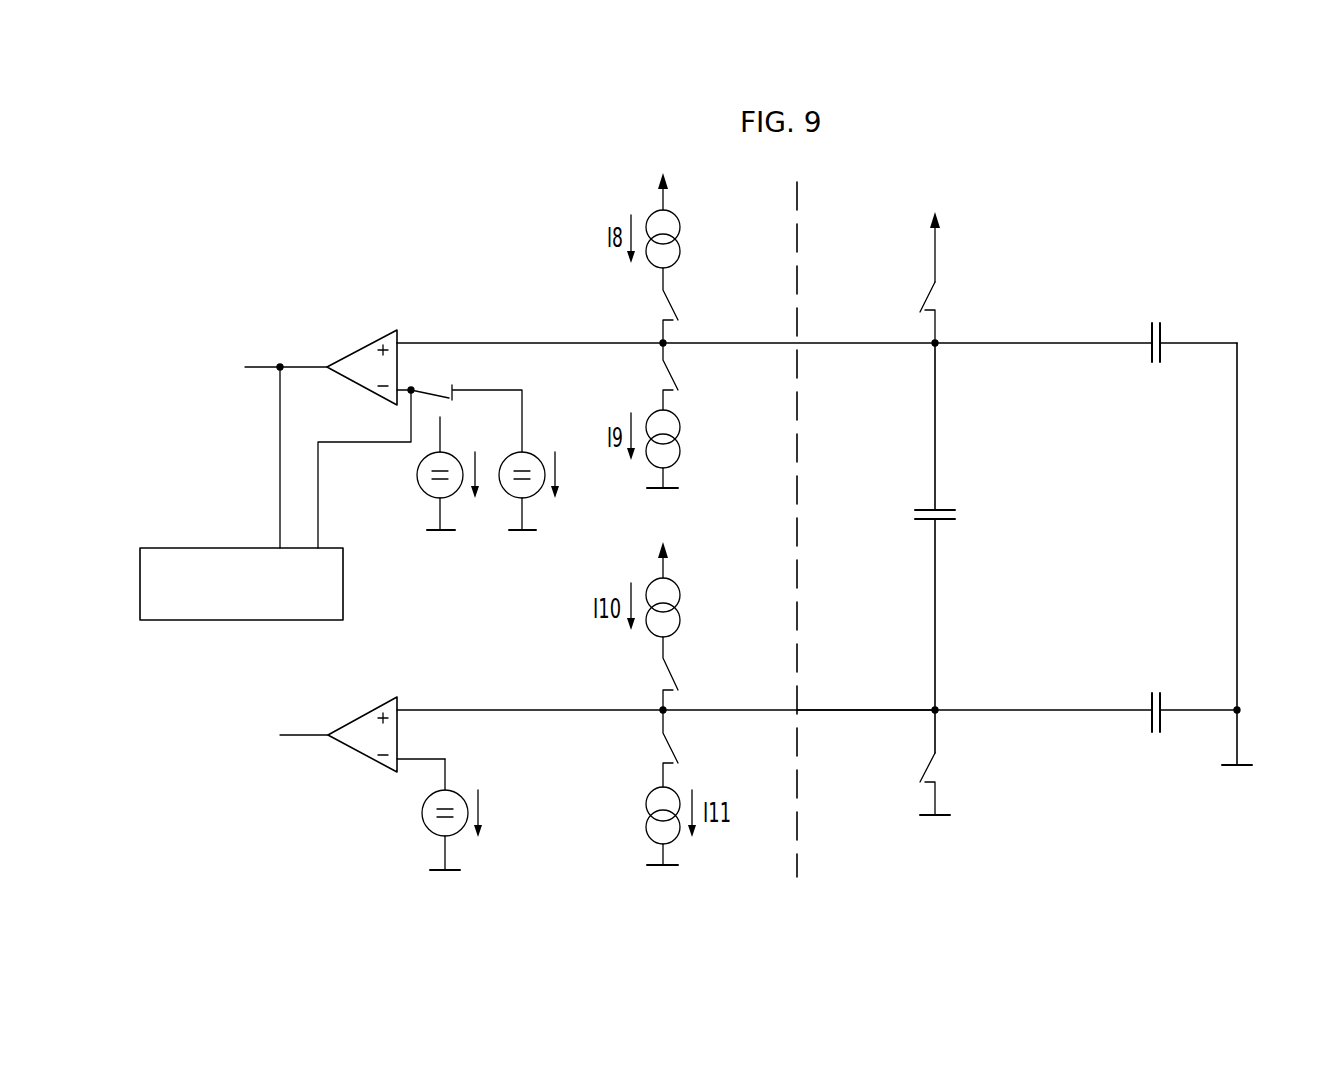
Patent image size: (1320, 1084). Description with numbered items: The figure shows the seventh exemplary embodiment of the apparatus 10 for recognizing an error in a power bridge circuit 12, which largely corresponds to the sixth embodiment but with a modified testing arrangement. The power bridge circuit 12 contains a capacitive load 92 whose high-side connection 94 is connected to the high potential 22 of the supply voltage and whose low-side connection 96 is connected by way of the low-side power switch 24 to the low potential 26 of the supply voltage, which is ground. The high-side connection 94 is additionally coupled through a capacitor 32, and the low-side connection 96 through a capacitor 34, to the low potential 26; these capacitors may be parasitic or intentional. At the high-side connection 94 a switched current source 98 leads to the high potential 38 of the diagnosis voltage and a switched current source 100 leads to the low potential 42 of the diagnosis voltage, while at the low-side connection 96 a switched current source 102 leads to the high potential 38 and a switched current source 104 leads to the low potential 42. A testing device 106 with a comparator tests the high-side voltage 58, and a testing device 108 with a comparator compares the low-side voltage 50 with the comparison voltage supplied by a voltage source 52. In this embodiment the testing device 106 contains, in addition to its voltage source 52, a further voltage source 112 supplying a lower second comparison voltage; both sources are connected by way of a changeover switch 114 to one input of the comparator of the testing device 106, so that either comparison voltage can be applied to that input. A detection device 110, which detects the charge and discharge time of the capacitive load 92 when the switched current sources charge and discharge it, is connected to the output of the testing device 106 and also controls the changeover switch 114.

The apparatus 10 is at (303, 195).
The power bridge circuit 12 is at (1185, 228).
The high potential of the supply voltage 22 is at (929, 221).
The low-side power switch 24 is at (925, 762).
The low potential of the supply voltage 26 is at (927, 818).
The capacitor 32 is at (1163, 333).
The capacitor 34 is at (1163, 702).
The high potential of the diagnosis voltage 38 is at (657, 181).
The low potential of the diagnosis voltage 42 is at (433, 533).
The low-side voltage 50 is at (923, 700).
The voltage source 52 is at (417, 474).
The high-side voltage 58 is at (918, 359).
The capacitive load 92 is at (927, 508).
The high-side connection 94 is at (938, 347).
The low-side connection 96 is at (938, 708).
The switched current source 98 is at (626, 275).
The switched current source 100 is at (626, 394).
The switched current source 102 is at (632, 661).
The switched current source 104 is at (635, 768).
The testing device 106 is at (360, 348).
The testing device 108 is at (357, 753).
The detection device 110 is at (190, 548).
The further voltage source 112 is at (523, 453).
The changeover switch 114 is at (430, 368).